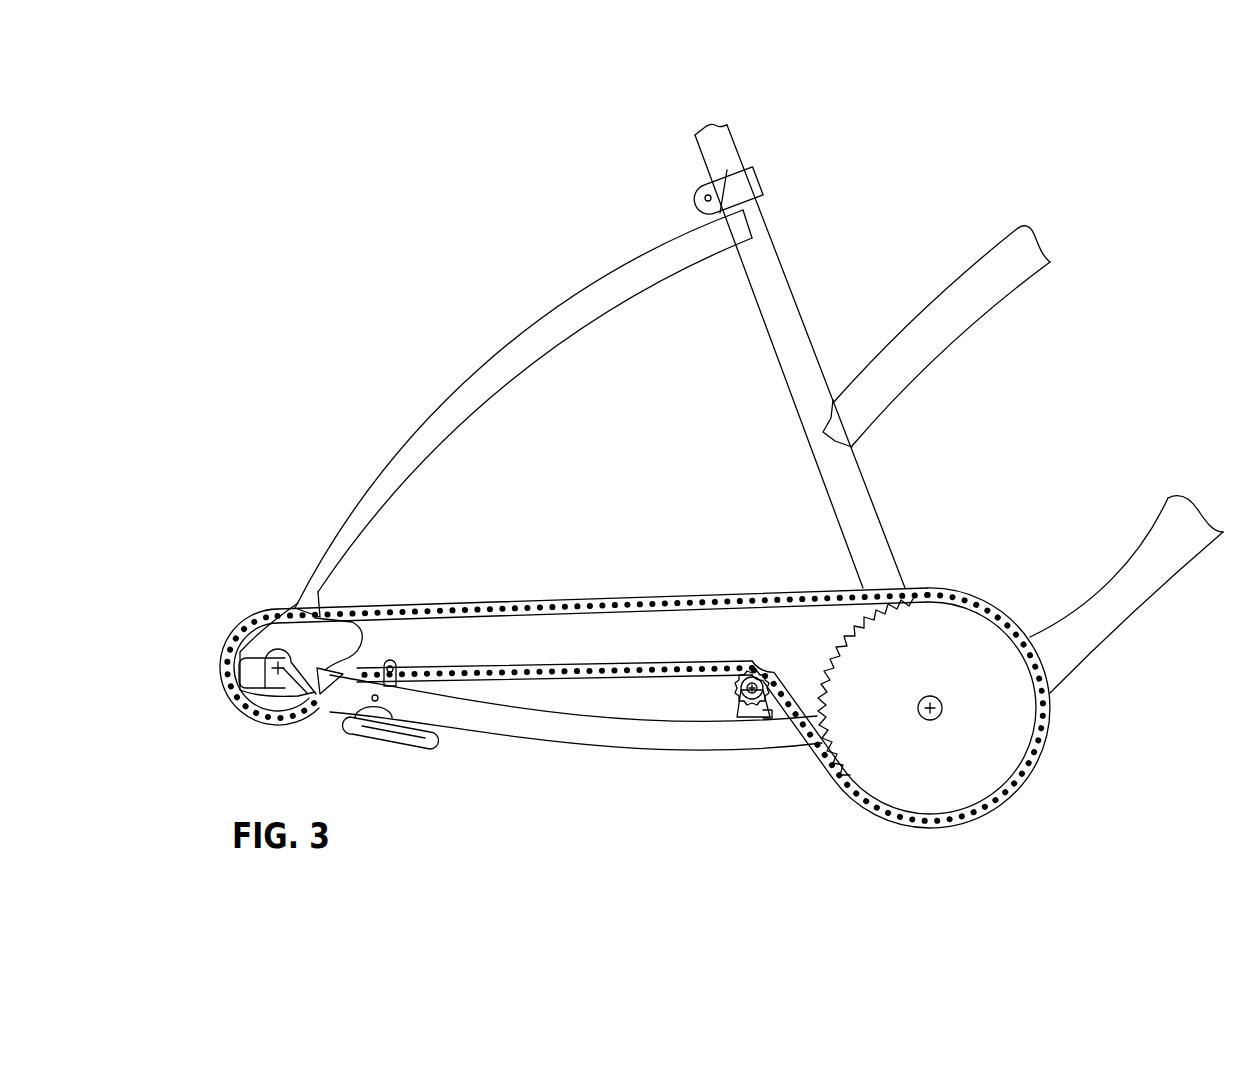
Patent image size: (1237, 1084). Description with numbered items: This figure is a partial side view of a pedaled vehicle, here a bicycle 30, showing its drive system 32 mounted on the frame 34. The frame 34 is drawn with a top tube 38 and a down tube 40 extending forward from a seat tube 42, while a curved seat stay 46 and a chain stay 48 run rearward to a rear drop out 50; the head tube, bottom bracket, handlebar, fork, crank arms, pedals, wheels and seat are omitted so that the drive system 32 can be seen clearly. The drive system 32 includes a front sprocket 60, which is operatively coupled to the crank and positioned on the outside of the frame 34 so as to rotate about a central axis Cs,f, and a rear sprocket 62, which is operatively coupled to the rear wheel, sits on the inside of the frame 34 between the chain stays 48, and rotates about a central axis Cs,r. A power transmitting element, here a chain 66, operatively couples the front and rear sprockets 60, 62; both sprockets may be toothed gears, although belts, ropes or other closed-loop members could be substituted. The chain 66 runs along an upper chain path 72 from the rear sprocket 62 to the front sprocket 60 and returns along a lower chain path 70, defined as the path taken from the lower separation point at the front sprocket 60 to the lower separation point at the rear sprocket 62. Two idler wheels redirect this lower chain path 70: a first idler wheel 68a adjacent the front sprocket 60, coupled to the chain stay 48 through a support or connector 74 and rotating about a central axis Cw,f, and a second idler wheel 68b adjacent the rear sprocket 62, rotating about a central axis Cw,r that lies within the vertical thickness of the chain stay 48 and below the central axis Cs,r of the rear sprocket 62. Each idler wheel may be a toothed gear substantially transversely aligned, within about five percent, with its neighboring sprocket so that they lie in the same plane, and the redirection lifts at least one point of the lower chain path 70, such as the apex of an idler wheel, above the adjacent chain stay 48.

The bicycle 30 is at (400, 290).
The drive system 32 is at (960, 853).
The frame 34 is at (947, 194).
The top tube 38 is at (962, 340).
The down tube 40 is at (1167, 602).
The seat tube 42 is at (866, 493).
The seat stays 46 is at (547, 316).
The chain stays 48 is at (612, 750).
The rear drop outs 50 is at (331, 656).
The front sprocket 60 is at (940, 657).
The rear sprocket 62 is at (277, 703).
The chain 66 is at (681, 590).
The first idler wheel 68a is at (730, 700).
The second idler wheel 68b is at (388, 720).
The lower chain path 70 is at (651, 679).
The upper chain span 72 is at (561, 599).
The support or connector 74 is at (748, 700).
The central axis of the front sprocket Cs,f is at (941, 712).
The central axis of the rear sprocket Cs,r is at (238, 658).
The central axis of the first idler wheel Cw,f is at (759, 697).
The central axis of the second idler wheel Cw,r is at (375, 701).